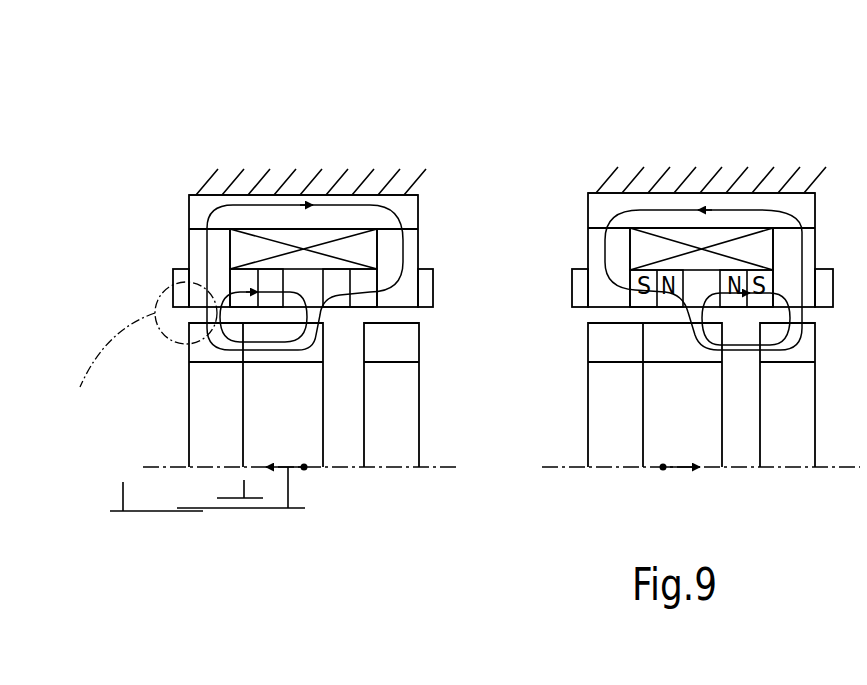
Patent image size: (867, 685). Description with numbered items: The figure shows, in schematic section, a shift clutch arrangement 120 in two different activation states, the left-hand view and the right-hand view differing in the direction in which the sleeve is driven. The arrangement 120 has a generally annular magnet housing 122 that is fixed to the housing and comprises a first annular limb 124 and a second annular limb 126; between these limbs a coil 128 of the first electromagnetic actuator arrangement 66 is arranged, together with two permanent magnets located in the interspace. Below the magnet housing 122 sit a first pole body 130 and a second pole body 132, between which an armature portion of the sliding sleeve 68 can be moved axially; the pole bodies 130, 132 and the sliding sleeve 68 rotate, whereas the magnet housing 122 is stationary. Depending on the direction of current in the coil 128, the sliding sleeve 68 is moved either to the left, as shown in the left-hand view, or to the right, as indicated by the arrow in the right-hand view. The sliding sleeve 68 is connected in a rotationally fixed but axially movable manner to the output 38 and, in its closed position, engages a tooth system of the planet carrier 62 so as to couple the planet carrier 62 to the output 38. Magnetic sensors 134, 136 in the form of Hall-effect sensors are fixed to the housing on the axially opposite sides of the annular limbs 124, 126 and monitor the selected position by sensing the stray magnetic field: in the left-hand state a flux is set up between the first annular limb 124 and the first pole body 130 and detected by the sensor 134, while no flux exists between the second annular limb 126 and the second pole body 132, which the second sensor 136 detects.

The shift clutch arrangement 120 is at (404, 134).
The magnet housing 122 is at (197, 190).
The first annular limb 124 is at (200, 242).
The second annular limb 126 is at (407, 248).
The coil 128 is at (362, 250).
The first electromagnetic actuator arrangement 66 is at (285, 192).
The magnetic sensor 134 is at (172, 268).
The second magnetic sensor 136 is at (433, 288).
The first pole body 130 is at (205, 353).
The second pole body 132 is at (402, 340).
The sliding sleeve 68 is at (270, 509).
The output 38 is at (247, 484).
The planet carrier 62 is at (150, 512).